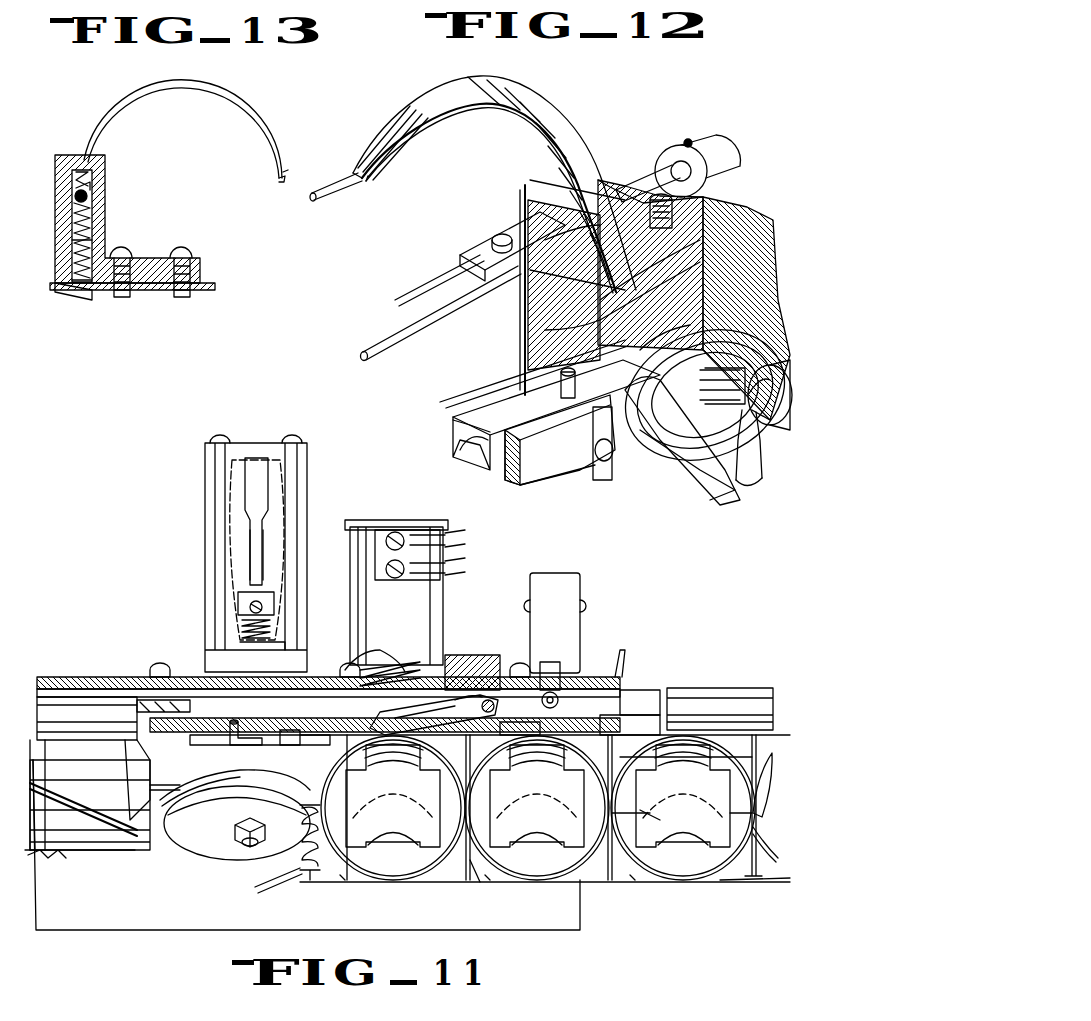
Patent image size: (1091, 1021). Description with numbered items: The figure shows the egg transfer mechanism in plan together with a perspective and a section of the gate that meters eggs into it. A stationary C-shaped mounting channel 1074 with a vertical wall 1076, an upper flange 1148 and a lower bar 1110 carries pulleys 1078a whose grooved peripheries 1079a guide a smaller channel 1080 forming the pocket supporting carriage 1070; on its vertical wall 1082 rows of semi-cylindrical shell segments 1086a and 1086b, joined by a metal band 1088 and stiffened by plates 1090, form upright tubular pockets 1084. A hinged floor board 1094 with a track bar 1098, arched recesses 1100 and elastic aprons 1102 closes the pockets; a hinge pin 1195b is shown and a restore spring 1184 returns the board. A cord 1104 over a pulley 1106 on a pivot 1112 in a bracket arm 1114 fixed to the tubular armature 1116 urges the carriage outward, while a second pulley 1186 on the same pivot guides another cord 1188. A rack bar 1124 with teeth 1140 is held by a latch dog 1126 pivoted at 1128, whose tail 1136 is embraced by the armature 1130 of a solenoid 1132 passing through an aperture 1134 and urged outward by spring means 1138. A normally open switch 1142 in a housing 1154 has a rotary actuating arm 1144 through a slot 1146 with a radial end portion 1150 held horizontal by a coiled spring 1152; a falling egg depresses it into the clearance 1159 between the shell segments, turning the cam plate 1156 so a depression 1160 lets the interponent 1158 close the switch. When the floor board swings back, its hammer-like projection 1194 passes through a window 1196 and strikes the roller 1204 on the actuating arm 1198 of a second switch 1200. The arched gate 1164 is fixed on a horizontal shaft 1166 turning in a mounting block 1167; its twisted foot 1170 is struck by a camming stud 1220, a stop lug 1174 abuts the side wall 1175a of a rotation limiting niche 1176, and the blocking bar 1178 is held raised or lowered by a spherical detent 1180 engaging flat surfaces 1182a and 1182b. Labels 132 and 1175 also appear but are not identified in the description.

In FIG. 12, the lamp assembly 132 is at (598, 486).
In FIG. 11, the lamp assembly 132 is at (640, 675).
In FIG. 12, the pocket supporting carriage 1070 is at (455, 430).
In FIG. 11, the pocket supporting carriage 1070 is at (742, 882).
In FIG. 12, the mounting channel 1074 is at (548, 487).
In FIG. 11, the mounting channel 1074 is at (66, 677).
In FIG. 12, the vertical wall 1076 is at (515, 470).
In FIG. 11, the vertical wall 1076 is at (622, 670).
In FIG. 11, the pulley 1078a is at (137, 720).
In FIG. 11, the grooved periphery 1079a is at (138, 682).
In FIG. 12, the carriage channel 1080 is at (485, 412).
In FIG. 11, the carriage channel 1080 is at (55, 728).
In FIG. 11, the vertical wall 1082 is at (148, 750).
In FIG. 11, the tubular pocket 1084 is at (393, 882).
In FIG. 11, the semi-cylindrical shell segment 1086a is at (350, 760).
In FIG. 11, the semi-cylindrical shell segment 1086b is at (445, 866).
In FIG. 11, the metal band 1088 is at (565, 886).
In FIG. 11, the plate 1090 is at (350, 885).
In FIG. 11, the floor board 1094 is at (652, 824).
In FIG. 11, the track bar 1098 is at (240, 790).
In FIG. 11, the arched recess 1100 is at (538, 796).
In FIG. 11, the apron 1102 is at (425, 840).
In FIG. 11, the cord 1104 is at (148, 790).
In FIG. 11, the pulley 1106 is at (210, 843).
In FIG. 11, the lower bar 1110 is at (142, 920).
In FIG. 11, the pivot 1112 is at (252, 848).
In FIG. 11, the bracket arm 1114 is at (222, 790).
In FIG. 11, the tubular armature 1116 is at (80, 852).
In FIG. 11, the rack bar 1124 is at (370, 725).
In FIG. 11, the latch dog 1126 is at (452, 716).
In FIG. 11, the pivot 1128 is at (475, 672).
In FIG. 11, the armature 1130 is at (436, 635).
In FIG. 11, the solenoid 1132 is at (432, 612).
In FIG. 11, the aperture 1134 is at (352, 660).
In FIG. 11, the tail 1136 is at (410, 720).
In FIG. 11, the spring means 1138 is at (395, 655).
In FIG. 11, the tooth 1140 is at (470, 722).
In FIG. 12, the switch 1142 is at (700, 490).
In FIG. 11, the switch 1142 is at (310, 476).
In FIG. 12, the rotary actuating arm 1144 is at (455, 300).
In FIG. 11, the rotary actuating arm 1144 is at (348, 735).
In FIG. 12, the slot 1146 is at (502, 234).
In FIG. 13, the upper flange 1148 is at (212, 287).
In FIG. 12, the upper flange 1148 is at (478, 247).
In FIG. 12, the radially directed end portion 1150 is at (388, 342).
In FIG. 12, the spring 1152 is at (715, 325).
In FIG. 11, the spring 1152 is at (240, 635).
In FIG. 12, the housing 1154 is at (660, 450).
In FIG. 11, the housing 1154 is at (210, 455).
In FIG. 12, the cam plate 1156 is at (742, 430).
In FIG. 11, the cam plate 1156 is at (240, 608).
In FIG. 12, the actuating interponent 1158 is at (775, 428).
In FIG. 11, the actuating interponent 1158 is at (252, 556).
In FIG. 11, the clearance 1159 is at (475, 875).
In FIG. 12, the depression 1160 is at (690, 360).
In FIG. 13, the arched gate 1164 is at (259, 107).
In FIG. 12, the arched gate 1164 is at (555, 113).
In FIG. 13, the horizontal shaft 1166 is at (86, 176).
In FIG. 12, the horizontal shaft 1166 is at (636, 195).
In FIG. 13, the mounting block 1167 is at (95, 221).
In FIG. 12, the mounting block 1167 is at (690, 262).
In FIG. 13, the foot 1170 is at (70, 296).
In FIG. 12, the foot 1170 is at (526, 345).
In FIG. 12, the stop lug 1174 is at (525, 330).
In FIG. 12, the plate 1175 is at (528, 305).
In FIG. 12, the side wall 1175a is at (690, 248).
In FIG. 12, the rotation limiting niche 1176 is at (690, 230).
In FIG. 13, the bar 1178 is at (285, 172).
In FIG. 12, the bar 1178 is at (318, 200).
In FIG. 13, the detent 1180 is at (88, 198).
In FIG. 12, the detent 1180 is at (676, 208).
In FIG. 13, the flat surface 1182a is at (90, 193).
In FIG. 12, the flat surface 1182a is at (663, 200).
In FIG. 13, the flat surface 1182b is at (76, 188).
In FIG. 11, the restore spring 1184 is at (288, 884).
In FIG. 11, the pulley 1186 is at (200, 767).
In FIG. 11, the cord 1188 is at (192, 728).
In FIG. 11, the hammer-like projection 1194 is at (240, 726).
In FIG. 11, the hinge pin 1195b is at (280, 740).
In FIG. 11, the window 1196 is at (258, 745).
In FIG. 11, the actuating arm 1198 is at (548, 692).
In FIG. 11, the switch 1200 is at (585, 585).
In FIG. 11, the roller 1204 is at (511, 702).
In FIG. 12, the camming stud 1220 is at (558, 378).